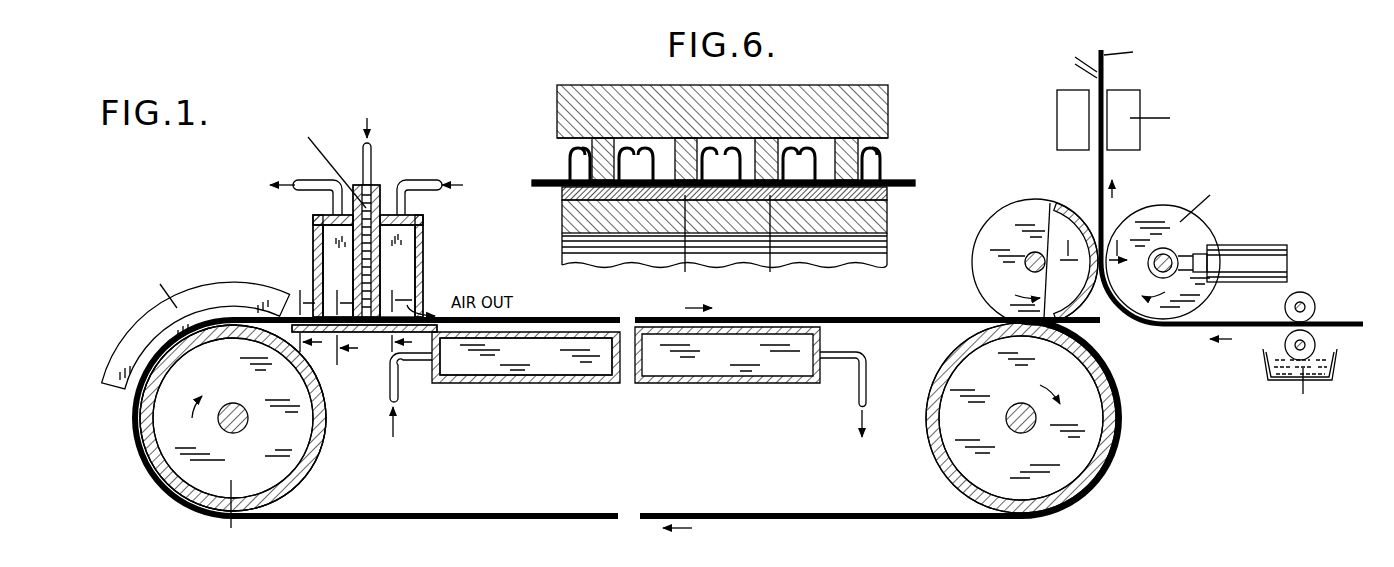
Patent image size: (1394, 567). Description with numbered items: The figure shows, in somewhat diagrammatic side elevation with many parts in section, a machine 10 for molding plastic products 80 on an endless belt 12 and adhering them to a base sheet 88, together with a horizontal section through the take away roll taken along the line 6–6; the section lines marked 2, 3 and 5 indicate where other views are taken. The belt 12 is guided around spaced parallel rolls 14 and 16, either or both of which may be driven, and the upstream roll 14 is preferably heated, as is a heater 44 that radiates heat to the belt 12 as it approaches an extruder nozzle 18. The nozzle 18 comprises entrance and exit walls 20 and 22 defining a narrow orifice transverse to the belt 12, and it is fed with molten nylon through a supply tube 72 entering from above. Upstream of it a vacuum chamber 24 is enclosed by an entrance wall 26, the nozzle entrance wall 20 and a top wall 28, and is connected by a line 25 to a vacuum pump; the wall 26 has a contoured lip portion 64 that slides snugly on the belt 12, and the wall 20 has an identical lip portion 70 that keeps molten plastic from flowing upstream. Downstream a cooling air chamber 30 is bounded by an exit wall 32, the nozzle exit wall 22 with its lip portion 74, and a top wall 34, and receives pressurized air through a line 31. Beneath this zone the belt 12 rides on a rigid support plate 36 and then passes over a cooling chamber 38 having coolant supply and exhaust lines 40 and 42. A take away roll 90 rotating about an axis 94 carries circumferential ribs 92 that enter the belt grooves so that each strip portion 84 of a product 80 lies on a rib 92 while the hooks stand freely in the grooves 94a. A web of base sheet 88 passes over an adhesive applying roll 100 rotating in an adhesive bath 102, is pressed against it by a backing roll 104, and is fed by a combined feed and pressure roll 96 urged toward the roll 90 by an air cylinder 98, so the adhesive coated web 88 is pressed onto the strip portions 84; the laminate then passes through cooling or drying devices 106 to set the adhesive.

In FIG. 1, the machine 10 is at (521, 480).
In FIG. 1, the endless belt 12 is at (848, 318).
In FIG. 1, the roll 14 is at (142, 448).
In FIG. 1, the roll 16 is at (1100, 449).
In FIG. 1, the extruder nozzle 18 is at (381, 182).
In FIG. 1, the entrance wall 20 is at (323, 252).
In FIG. 1, the exit wall 22 is at (380, 262).
In FIG. 1, the vacuum chamber 24 is at (311, 238).
In FIG. 1, the line 25 is at (310, 180).
In FIG. 1, the entrance wall 26 is at (313, 266).
In FIG. 1, the top wall 28 is at (333, 218).
In FIG. 1, the cooling air chamber 30 is at (426, 246).
In FIG. 1, the line 31 is at (438, 180).
In FIG. 1, the exit wall 32 is at (424, 262).
In FIG. 1, the top wall 34 is at (408, 219).
In FIG. 1, the support plate 36 is at (327, 335).
In FIG. 1, the cooling chamber 38 is at (595, 380).
In FIG. 1, the supply line 40 is at (397, 389).
In FIG. 1, the exhaust line 42 is at (868, 383).
In FIG. 1, the heater 44 is at (138, 332).
In FIG. 1, the lip portion 64 is at (262, 340).
In FIG. 1, the lip portion 70 is at (362, 334).
In FIG. 1, the molten nylon feed tube 72 is at (362, 150).
In FIG. 1, the lip portion 74 is at (437, 345).
In FIG. 6, the plastic product 80 is at (667, 160).
In FIG. 6, the strip portion 84 is at (727, 246).
In FIG. 1, the base sheet 88 is at (1190, 330).
In FIG. 6, the base sheet 88 is at (548, 180).
In FIG. 1, the take away roll 90 is at (1010, 207).
In FIG. 6, the take away roll 90 is at (888, 112).
In FIG. 1, the circumferential rib 92 is at (1068, 207).
In FIG. 6, the circumferential rib 92 is at (763, 152).
In FIG. 1, the axis 94 is at (1026, 267).
In FIG. 6, the groove 94a is at (642, 145).
In FIG. 1, the feed and pressure roll 96 is at (1155, 208).
In FIG. 6, the feed and pressure roll 96 is at (576, 216).
In FIG. 1, the air cylinder 98 is at (1266, 256).
In FIG. 1, the adhesive applying roll 100 is at (1291, 336).
In FIG. 1, the adhesive bath 102 is at (1268, 363).
In FIG. 1, the backing roll 104 is at (1316, 304).
In FIG. 1, the cooling or drying device 106 is at (1057, 118).
In FIG. 1, the dimension 2 is at (311, 320).
In FIG. 1, the dimension 3 is at (347, 322).
In FIG. 1, the dimension 5 is at (393, 313).
In FIG. 1, the dimension 6 is at (1093, 264).